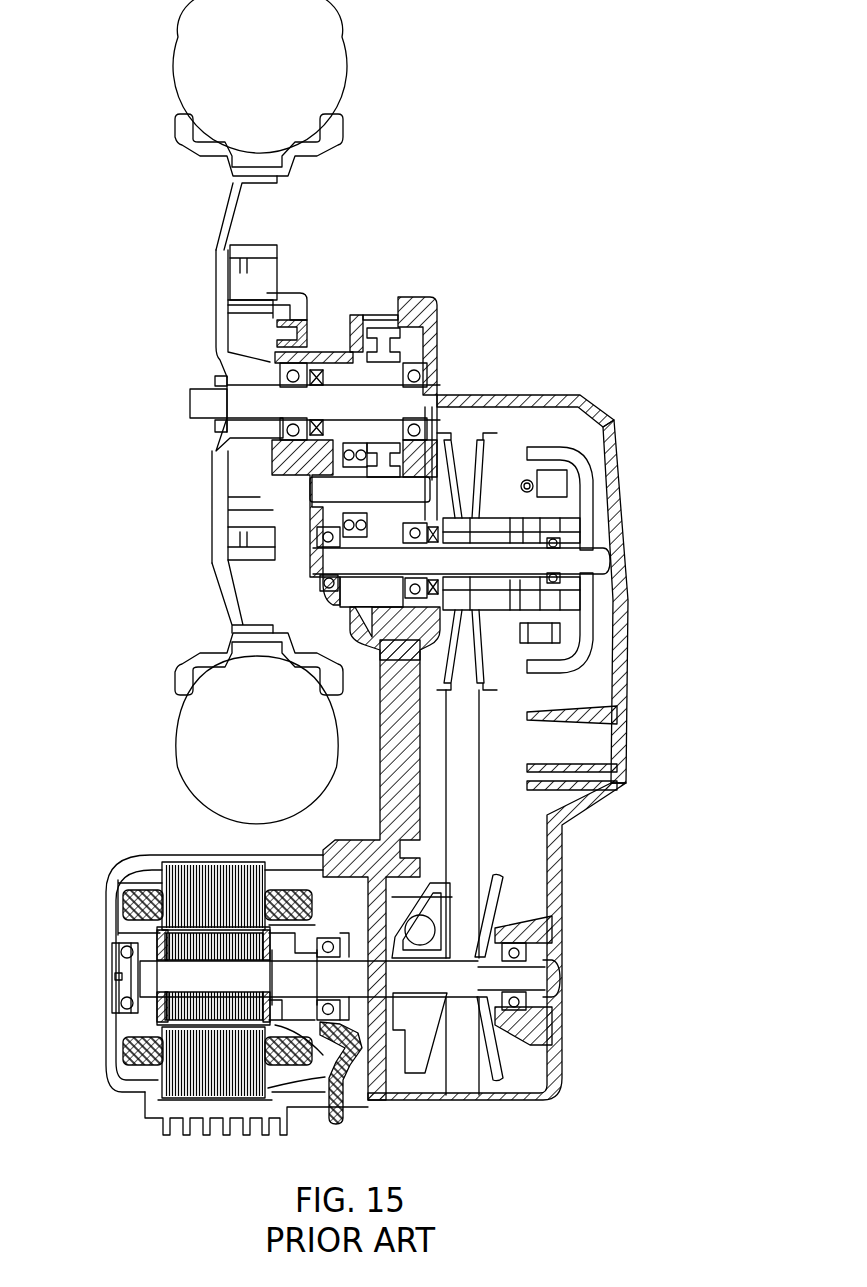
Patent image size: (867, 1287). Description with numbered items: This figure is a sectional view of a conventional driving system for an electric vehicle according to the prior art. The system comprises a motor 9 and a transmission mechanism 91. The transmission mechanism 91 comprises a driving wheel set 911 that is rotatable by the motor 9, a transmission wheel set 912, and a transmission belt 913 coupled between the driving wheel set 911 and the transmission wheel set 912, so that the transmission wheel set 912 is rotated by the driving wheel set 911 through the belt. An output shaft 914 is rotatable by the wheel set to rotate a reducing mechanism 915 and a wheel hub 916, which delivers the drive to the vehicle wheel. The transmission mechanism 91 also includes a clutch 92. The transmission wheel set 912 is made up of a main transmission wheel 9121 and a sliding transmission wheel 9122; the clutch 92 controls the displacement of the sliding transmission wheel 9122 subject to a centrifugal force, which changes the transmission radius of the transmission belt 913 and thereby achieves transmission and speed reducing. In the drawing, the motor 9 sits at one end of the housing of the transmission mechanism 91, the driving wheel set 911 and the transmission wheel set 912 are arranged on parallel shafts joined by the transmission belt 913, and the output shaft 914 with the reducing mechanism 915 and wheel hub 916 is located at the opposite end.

The motor 9 is at (107, 1068).
The transmission mechanism 91 is at (630, 467).
The clutch 92 is at (590, 600).
The driving wheel set 911 is at (513, 910).
The transmission wheel set 912 is at (508, 443).
The transmission belt 913 is at (467, 813).
The output shaft 914 is at (204, 405).
The reducing mechanism 915 is at (405, 348).
The wheel hub 916 is at (243, 290).
The main transmission wheel 9121 is at (452, 430).
The sliding transmission wheel 9122 is at (492, 423).